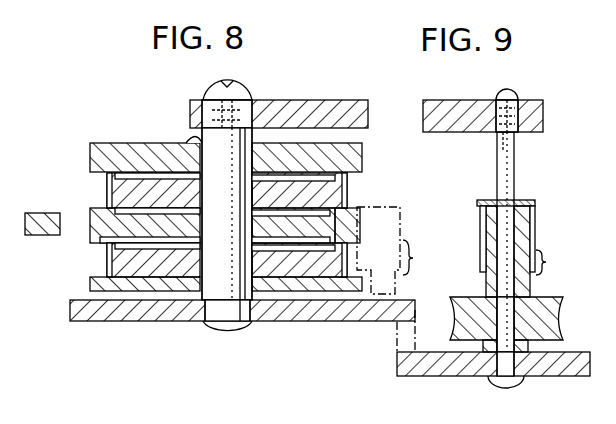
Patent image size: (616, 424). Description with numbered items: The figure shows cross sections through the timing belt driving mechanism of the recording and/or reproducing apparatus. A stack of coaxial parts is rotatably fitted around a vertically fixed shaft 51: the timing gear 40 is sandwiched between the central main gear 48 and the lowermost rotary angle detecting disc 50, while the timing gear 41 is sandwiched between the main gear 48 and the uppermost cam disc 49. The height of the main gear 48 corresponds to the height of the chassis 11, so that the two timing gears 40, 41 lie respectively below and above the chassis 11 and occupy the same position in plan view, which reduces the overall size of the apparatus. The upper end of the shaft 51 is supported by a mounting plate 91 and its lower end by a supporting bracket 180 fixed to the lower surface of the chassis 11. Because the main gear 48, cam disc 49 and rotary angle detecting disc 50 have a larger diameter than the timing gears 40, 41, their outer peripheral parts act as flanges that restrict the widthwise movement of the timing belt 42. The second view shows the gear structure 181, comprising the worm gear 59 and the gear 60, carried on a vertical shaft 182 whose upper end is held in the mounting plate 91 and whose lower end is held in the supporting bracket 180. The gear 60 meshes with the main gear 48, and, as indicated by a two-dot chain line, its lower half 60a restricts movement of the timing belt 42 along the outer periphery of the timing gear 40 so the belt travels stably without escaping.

In FIG. 8, the chassis 11 is at (42, 236).
In FIG. 8, the timing gear 40 is at (104, 267).
In FIG. 8, the timing gear 41 is at (104, 187).
In FIG. 8, the timing belt 42 is at (355, 263).
In FIG. 8, the main gear 48 is at (90, 230).
In FIG. 8, the cam disc 49 is at (120, 148).
In FIG. 8, the rotary angle detecting disc 50 is at (126, 282).
In FIG. 8, the shaft 51 is at (186, 142).
In FIG. 9, the worm gear 59 is at (561, 321).
In FIG. 8, the gear 60 is at (380, 207).
In FIG. 9, the gear 60 is at (536, 226).
In FIG. 8, the lower half of the gear 60a is at (430, 257).
In FIG. 9, the lower half of the gear 60a is at (562, 262).
In FIG. 8, the mounting plate 91 is at (288, 104).
In FIG. 9, the mounting plate 91 is at (452, 106).
In FIG. 8, the supporting bracket 180 is at (287, 318).
In FIG. 9, the supporting bracket 180 is at (537, 373).
In FIG. 9, the gear structure 181 is at (547, 283).
In FIG. 9, the shaft 182 is at (516, 170).